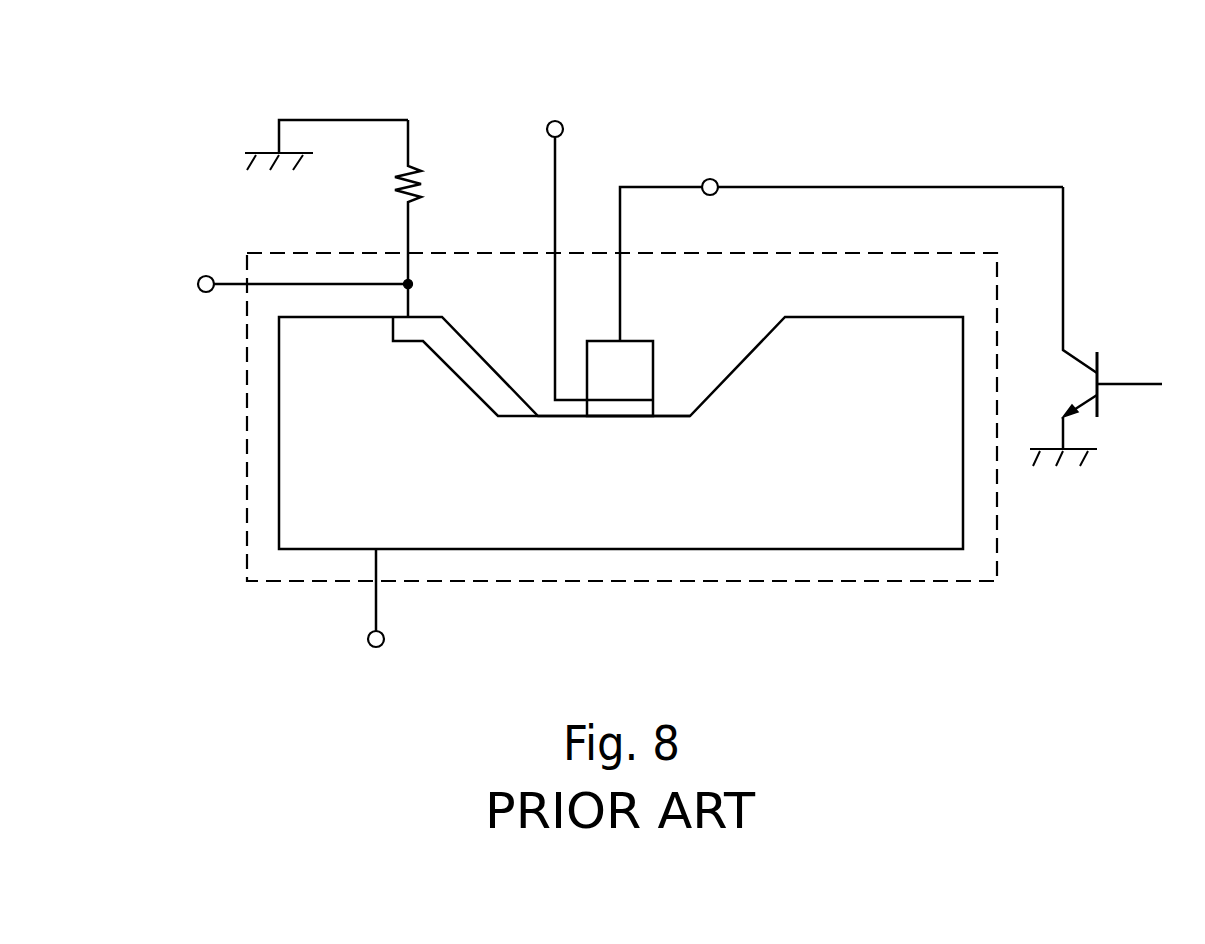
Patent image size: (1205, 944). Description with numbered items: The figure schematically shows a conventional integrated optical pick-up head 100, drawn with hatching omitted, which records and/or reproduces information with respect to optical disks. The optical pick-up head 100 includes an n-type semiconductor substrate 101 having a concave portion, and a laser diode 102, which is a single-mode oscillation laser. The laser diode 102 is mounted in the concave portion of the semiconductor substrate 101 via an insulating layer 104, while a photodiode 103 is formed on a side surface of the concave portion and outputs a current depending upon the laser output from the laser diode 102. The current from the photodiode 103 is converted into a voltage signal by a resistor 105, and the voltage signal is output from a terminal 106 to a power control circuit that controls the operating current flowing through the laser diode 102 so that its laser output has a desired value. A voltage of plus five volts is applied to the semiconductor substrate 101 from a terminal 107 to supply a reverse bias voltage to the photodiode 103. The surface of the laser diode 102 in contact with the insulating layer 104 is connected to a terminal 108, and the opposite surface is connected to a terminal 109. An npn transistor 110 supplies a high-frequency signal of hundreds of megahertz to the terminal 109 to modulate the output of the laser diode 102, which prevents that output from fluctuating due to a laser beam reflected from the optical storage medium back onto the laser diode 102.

The integrated optical pick-up head 100 is at (245, 482).
The semiconductor substrate 101 is at (917, 317).
The laser diode 102 is at (641, 373).
The photodiode 103 is at (478, 352).
The insulating layer 104 is at (614, 410).
The resistor 105 is at (415, 178).
The terminal 106 is at (197, 284).
The terminal 107 is at (367, 640).
The terminal 108 is at (558, 121).
The terminal 109 is at (712, 179).
The npn transistor 110 is at (1097, 368).